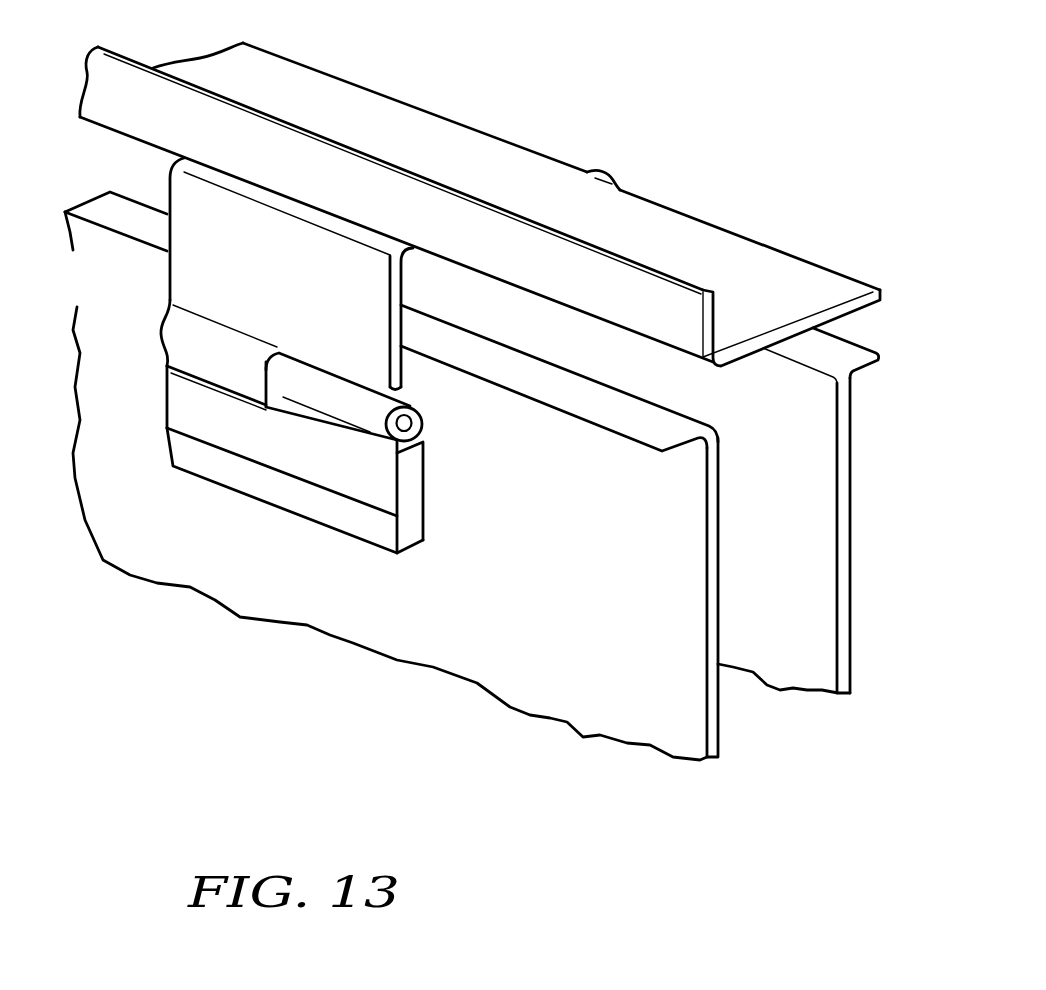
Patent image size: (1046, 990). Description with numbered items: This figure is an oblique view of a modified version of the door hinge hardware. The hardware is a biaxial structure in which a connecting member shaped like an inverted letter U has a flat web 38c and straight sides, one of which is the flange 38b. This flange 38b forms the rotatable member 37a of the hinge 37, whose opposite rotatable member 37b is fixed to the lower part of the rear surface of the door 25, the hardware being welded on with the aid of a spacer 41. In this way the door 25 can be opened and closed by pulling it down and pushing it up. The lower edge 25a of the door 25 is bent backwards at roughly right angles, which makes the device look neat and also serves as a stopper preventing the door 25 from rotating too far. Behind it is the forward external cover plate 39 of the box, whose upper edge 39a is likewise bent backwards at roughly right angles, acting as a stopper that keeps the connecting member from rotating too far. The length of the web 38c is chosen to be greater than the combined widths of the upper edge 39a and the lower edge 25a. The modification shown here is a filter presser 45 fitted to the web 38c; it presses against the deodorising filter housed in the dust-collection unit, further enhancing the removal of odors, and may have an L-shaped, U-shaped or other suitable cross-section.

The web 38c is at (240, 190).
The filter presser 45 is at (518, 163).
The flange of connecting member 38b is at (208, 260).
The rotatable member of hinge 37a is at (227, 284).
The hinge 37 is at (274, 469).
The opposite rotatable member of hinge 37b is at (210, 427).
The spacer 41 is at (357, 518).
The door 25 is at (483, 673).
The lower edge of door 25a is at (680, 417).
The forward external cover plate 39 is at (807, 678).
The upper edge of forward external cover plate 39a is at (847, 360).